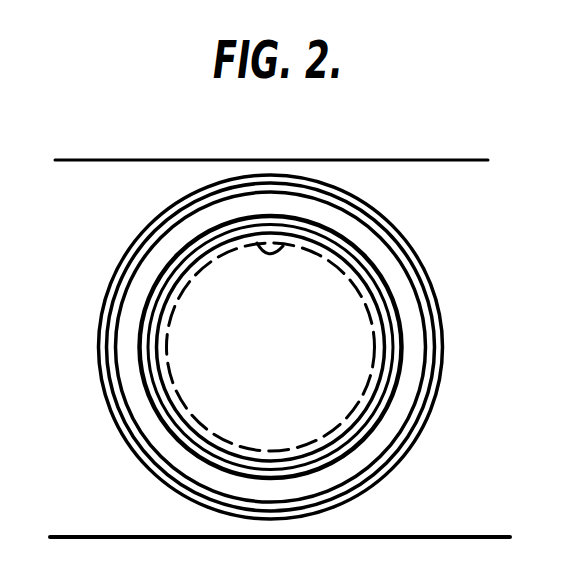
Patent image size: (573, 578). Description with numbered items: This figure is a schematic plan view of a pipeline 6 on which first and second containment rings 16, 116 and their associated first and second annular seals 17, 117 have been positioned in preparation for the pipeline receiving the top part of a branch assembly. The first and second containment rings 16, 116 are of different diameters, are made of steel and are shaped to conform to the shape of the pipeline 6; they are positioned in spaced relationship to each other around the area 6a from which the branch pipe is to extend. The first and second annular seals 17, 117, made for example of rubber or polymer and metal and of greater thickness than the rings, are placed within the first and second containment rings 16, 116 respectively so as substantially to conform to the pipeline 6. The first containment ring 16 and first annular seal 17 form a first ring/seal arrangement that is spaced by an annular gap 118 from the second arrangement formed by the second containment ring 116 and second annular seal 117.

The pipeline 6 is at (405, 181).
The area 6a is at (257, 243).
The first containment ring 16 is at (398, 307).
The first annular seal 17 is at (152, 300).
The second containment ring 116 is at (367, 490).
The second annular seal 117 is at (158, 463).
The annular gap 118 is at (387, 432).